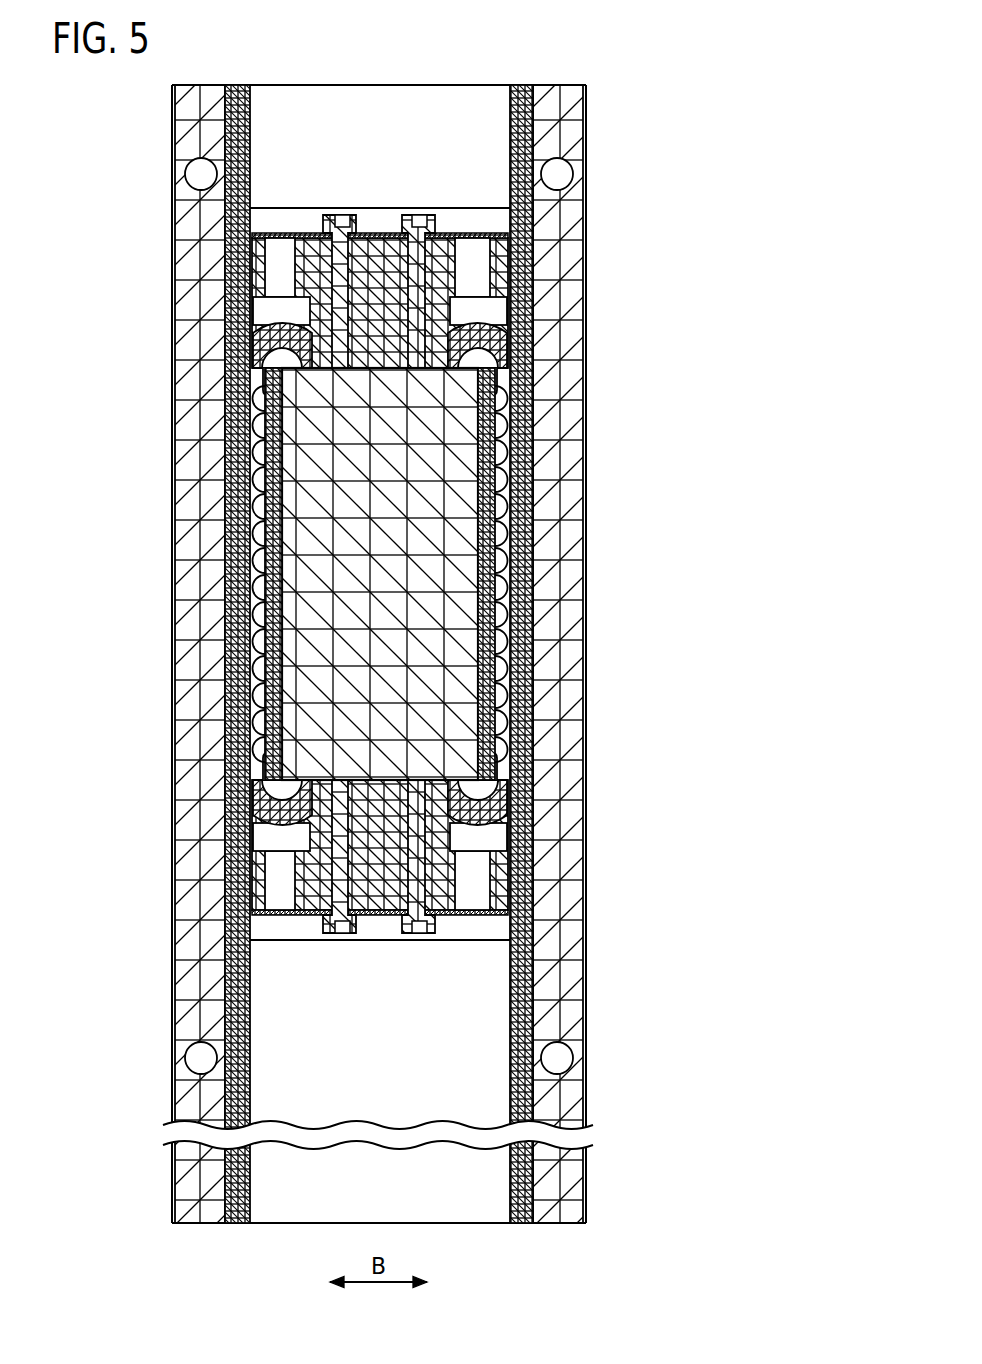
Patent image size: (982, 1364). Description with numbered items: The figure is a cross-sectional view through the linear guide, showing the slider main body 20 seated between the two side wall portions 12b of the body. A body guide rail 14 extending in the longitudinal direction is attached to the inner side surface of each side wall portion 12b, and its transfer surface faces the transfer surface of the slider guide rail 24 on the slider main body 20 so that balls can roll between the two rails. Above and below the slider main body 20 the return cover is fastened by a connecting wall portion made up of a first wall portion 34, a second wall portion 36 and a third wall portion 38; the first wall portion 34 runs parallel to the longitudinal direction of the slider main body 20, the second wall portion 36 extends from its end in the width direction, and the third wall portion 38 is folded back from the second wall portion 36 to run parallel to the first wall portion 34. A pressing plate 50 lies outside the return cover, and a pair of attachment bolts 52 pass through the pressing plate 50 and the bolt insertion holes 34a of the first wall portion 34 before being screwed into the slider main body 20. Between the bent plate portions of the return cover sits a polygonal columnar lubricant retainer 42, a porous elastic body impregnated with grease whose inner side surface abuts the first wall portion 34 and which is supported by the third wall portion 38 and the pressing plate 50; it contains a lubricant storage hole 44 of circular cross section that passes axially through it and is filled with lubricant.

The side wall portion 12b is at (563, 633).
The body guide rail 14 is at (520, 573).
The slider main body 20 is at (437, 483).
The slider guide rail 24 is at (273, 513).
The first wall portion 34 is at (298, 250).
The bolt insertion hole 34a is at (347, 288).
The second wall portion 36 is at (275, 335).
The third wall portion 38 is at (256, 312).
The lubricant retainer 42 is at (453, 245).
The lubricant storage hole 44 is at (480, 255).
The pressing plate 50 is at (277, 233).
The attachment bolt 52 is at (368, 250).